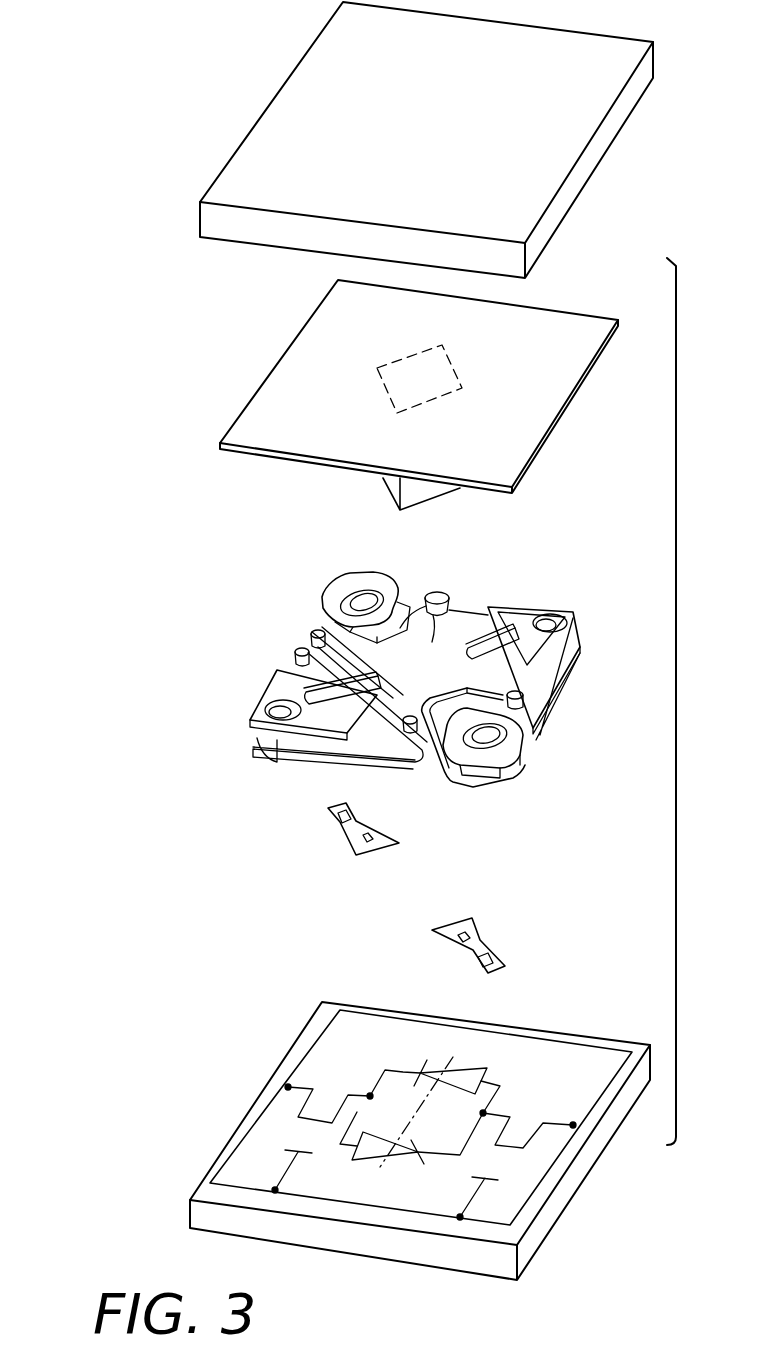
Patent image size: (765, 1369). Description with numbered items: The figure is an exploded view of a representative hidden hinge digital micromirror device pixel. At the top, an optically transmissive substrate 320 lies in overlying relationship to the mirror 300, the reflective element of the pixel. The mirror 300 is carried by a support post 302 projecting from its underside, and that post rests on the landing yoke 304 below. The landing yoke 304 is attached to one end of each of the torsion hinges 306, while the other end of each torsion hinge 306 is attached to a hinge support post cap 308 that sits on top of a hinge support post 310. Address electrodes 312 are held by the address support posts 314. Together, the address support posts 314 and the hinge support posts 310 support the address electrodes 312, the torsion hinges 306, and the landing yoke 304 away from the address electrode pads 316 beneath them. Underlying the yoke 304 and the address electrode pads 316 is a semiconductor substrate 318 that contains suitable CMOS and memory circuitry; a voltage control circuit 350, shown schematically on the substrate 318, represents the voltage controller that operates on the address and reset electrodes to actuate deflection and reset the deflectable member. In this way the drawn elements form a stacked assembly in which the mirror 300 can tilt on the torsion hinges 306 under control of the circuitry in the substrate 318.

The mirror 300 is at (278, 388).
The support post 302 is at (390, 491).
The landing yoke 304 is at (432, 640).
The torsion hinges 306 is at (470, 620).
The hinge support post cap 308 is at (565, 600).
The hinge support post 310 is at (575, 652).
The address electrodes 312 is at (340, 587).
The address support posts 314 is at (487, 780).
The address electrode pads 316 is at (333, 827).
The semiconductor substrate 318 is at (525, 1028).
The optically transmissive substrate 320 is at (242, 163).
The voltage control circuit 350 is at (385, 1207).